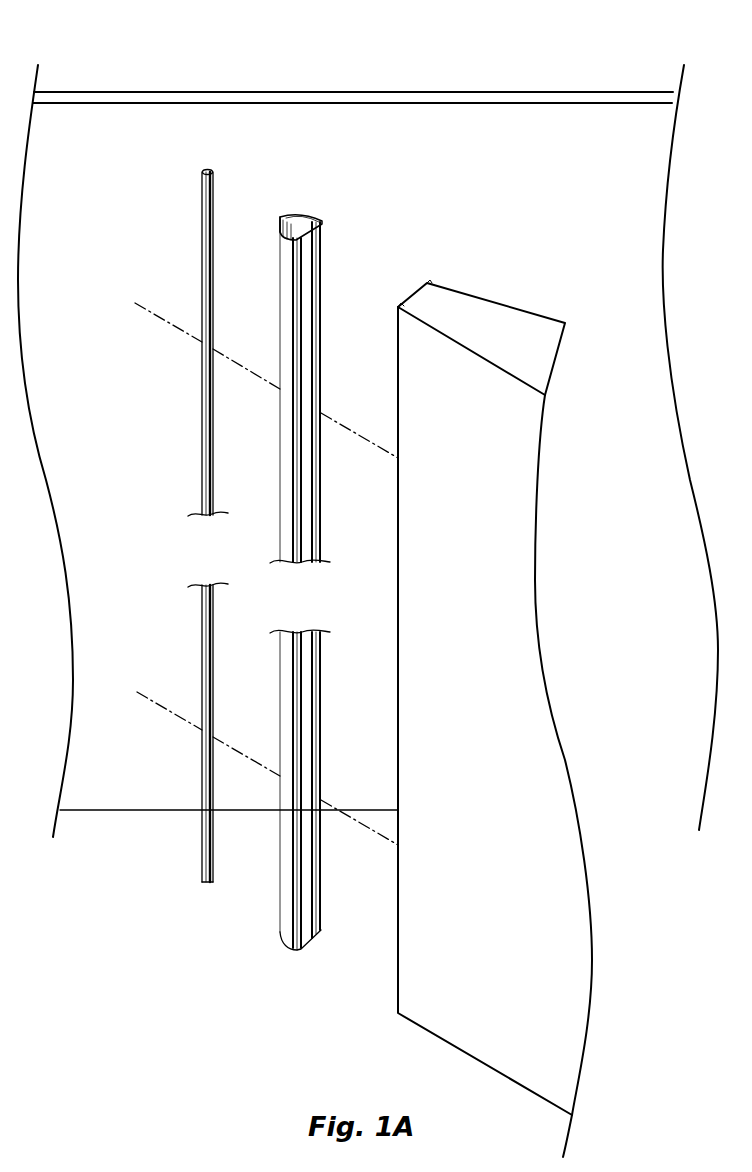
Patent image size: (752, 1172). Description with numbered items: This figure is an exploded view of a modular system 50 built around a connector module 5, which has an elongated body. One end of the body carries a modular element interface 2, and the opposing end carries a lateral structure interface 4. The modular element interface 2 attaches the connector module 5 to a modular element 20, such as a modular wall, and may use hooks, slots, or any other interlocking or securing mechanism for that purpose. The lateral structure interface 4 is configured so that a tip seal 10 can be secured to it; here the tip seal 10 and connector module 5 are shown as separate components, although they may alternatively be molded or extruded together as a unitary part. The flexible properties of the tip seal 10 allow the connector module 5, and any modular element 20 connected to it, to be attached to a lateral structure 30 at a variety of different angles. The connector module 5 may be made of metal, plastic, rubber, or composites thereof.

The modular element interface 2 is at (326, 247).
The lateral structure interface 4 is at (282, 215).
The connector module 5 is at (305, 215).
The tip seal 10 is at (203, 172).
The modular element 20 is at (497, 315).
The lateral structure 30 is at (535, 88).
The modular system 50 is at (160, 1025).